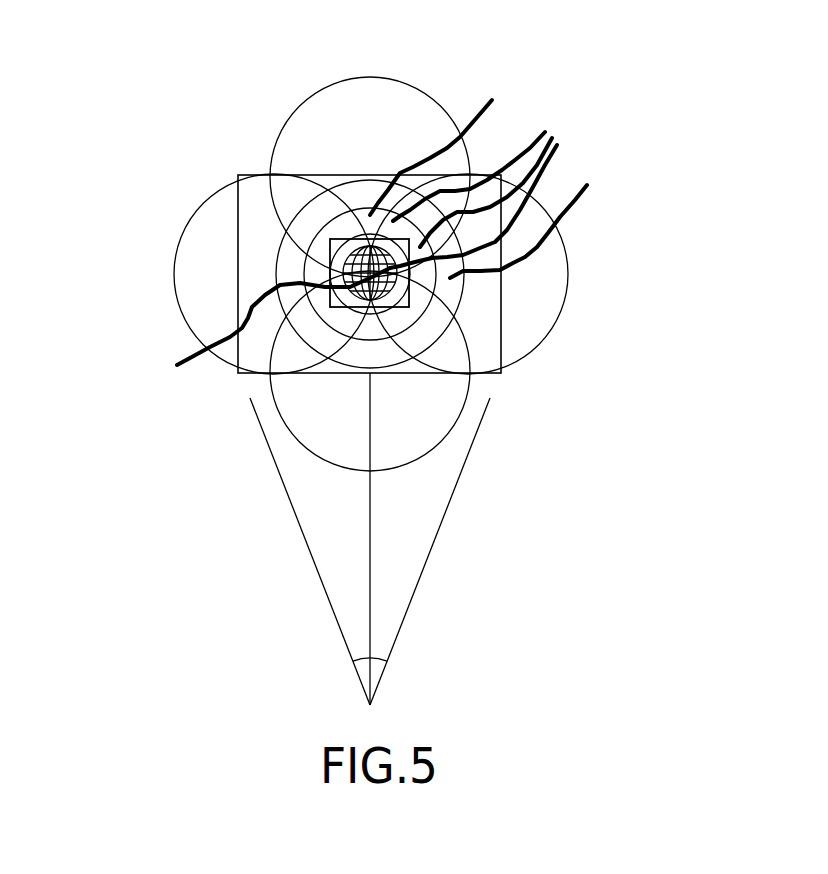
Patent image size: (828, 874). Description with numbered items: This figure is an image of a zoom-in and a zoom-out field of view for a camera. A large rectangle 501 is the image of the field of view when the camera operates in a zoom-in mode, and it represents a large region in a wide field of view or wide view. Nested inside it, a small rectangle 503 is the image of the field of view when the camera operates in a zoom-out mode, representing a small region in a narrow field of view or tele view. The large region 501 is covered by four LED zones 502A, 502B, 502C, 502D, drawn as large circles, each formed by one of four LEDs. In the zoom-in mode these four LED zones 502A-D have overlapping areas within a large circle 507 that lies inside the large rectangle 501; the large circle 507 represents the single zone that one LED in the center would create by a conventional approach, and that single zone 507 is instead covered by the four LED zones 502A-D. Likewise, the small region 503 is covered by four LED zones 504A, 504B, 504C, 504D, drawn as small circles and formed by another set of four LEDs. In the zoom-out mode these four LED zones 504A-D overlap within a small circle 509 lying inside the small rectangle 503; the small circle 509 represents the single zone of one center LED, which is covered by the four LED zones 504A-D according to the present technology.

The large rectangle 501 is at (325, 245).
The LED zone 502A is at (370, 150).
The LED zone 502B is at (497, 274).
The LED zone 502C is at (421, 371).
The LED zone 502D is at (207, 274).
The small rectangle 503 is at (320, 351).
The LED zone 504A is at (449, 140).
The LED zone 504B is at (496, 189).
The LED zone 504C is at (534, 216).
The LED zone 504D is at (255, 326).
The large circle 507 is at (370, 206).
The small circle 509 is at (326, 386).